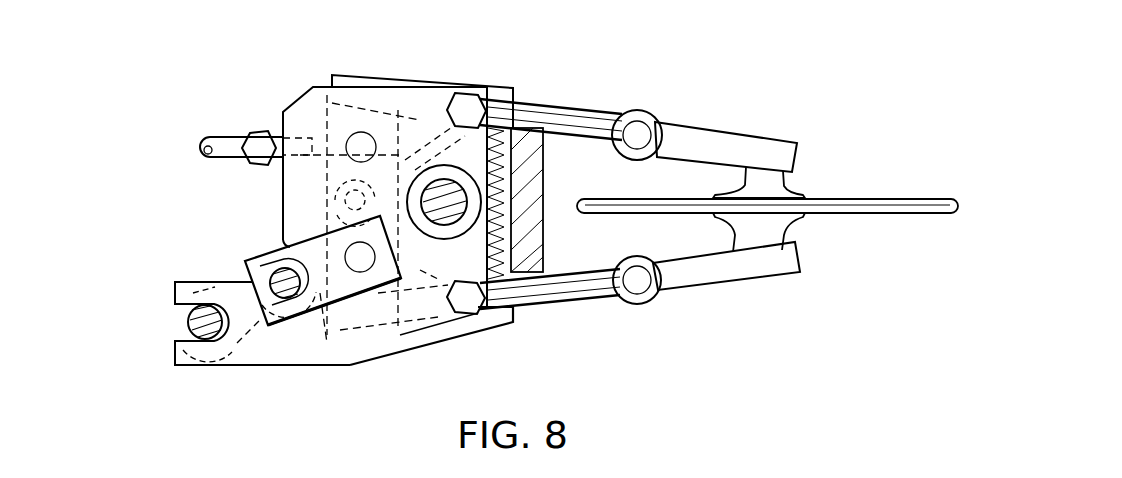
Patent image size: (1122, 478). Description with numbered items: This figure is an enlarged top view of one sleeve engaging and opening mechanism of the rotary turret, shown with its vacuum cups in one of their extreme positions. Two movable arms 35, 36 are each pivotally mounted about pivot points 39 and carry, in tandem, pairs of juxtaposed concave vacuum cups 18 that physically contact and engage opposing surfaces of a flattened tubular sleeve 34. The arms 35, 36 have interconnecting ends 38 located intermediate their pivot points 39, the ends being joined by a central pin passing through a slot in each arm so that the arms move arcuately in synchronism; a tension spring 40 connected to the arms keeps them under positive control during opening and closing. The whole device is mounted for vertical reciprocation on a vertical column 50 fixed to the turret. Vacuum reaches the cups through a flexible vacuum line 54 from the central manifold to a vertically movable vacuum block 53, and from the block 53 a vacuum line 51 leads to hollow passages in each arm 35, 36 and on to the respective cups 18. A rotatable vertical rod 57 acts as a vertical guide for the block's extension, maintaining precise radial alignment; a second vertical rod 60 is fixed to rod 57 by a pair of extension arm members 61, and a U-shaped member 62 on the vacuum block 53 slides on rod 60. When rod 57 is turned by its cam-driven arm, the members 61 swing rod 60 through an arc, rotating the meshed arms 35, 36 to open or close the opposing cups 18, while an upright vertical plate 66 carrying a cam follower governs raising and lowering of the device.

The vacuum cups 18 is at (805, 197).
The sleeve 34 is at (917, 215).
The movable arm 35 is at (715, 275).
The movable arm 36 is at (715, 145).
The interconnecting ends 38 is at (318, 200).
The pivot points 39 is at (362, 140).
The tension spring 40 is at (506, 170).
The vertical column 50 is at (436, 190).
The vacuum line 51 is at (586, 303).
The vacuum block 53 is at (453, 342).
The flexible vacuum line 54 is at (230, 137).
The rotatable vertical rod 57 is at (186, 325).
The second vertical rod 60 is at (275, 270).
The extension arm members 61 is at (237, 343).
The U-shaped member 62 is at (325, 330).
The upright vertical plate 66 is at (545, 218).